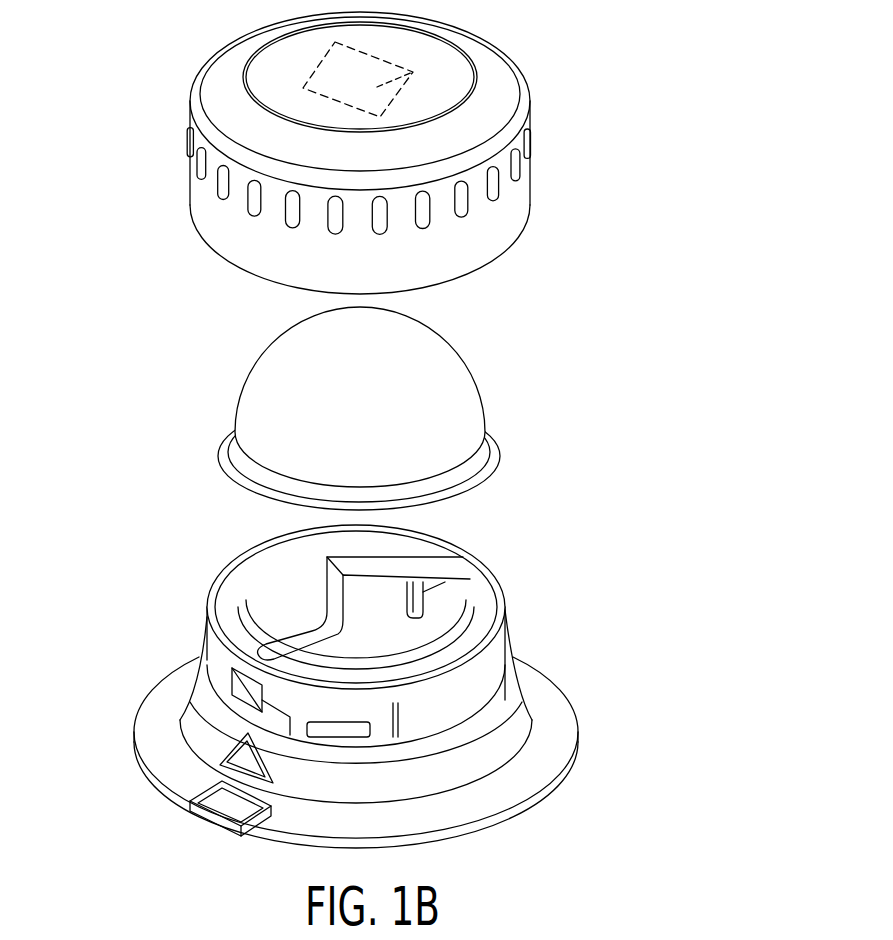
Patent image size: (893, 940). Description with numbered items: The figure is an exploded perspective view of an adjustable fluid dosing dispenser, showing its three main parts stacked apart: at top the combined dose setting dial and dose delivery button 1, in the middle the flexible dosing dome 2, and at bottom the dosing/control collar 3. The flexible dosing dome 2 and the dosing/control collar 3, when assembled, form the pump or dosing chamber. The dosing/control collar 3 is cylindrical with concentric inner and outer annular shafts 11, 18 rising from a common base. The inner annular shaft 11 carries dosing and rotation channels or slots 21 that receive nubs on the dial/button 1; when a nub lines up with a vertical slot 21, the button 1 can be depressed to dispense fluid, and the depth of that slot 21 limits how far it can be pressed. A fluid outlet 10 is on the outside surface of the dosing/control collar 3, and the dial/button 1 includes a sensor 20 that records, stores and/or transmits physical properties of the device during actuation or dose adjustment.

The combined dose setting dial and dose delivery button 1 is at (220, 57).
The flexible dosing dome 2 is at (255, 360).
The dosing/control collar 3 is at (349, 690).
The fluid outlet 10 is at (185, 828).
The inner annular shaft 11 is at (455, 547).
The outer annular shaft 18 is at (520, 703).
The sensor 20 is at (413, 72).
The vertical dosing slots 21 is at (337, 597).